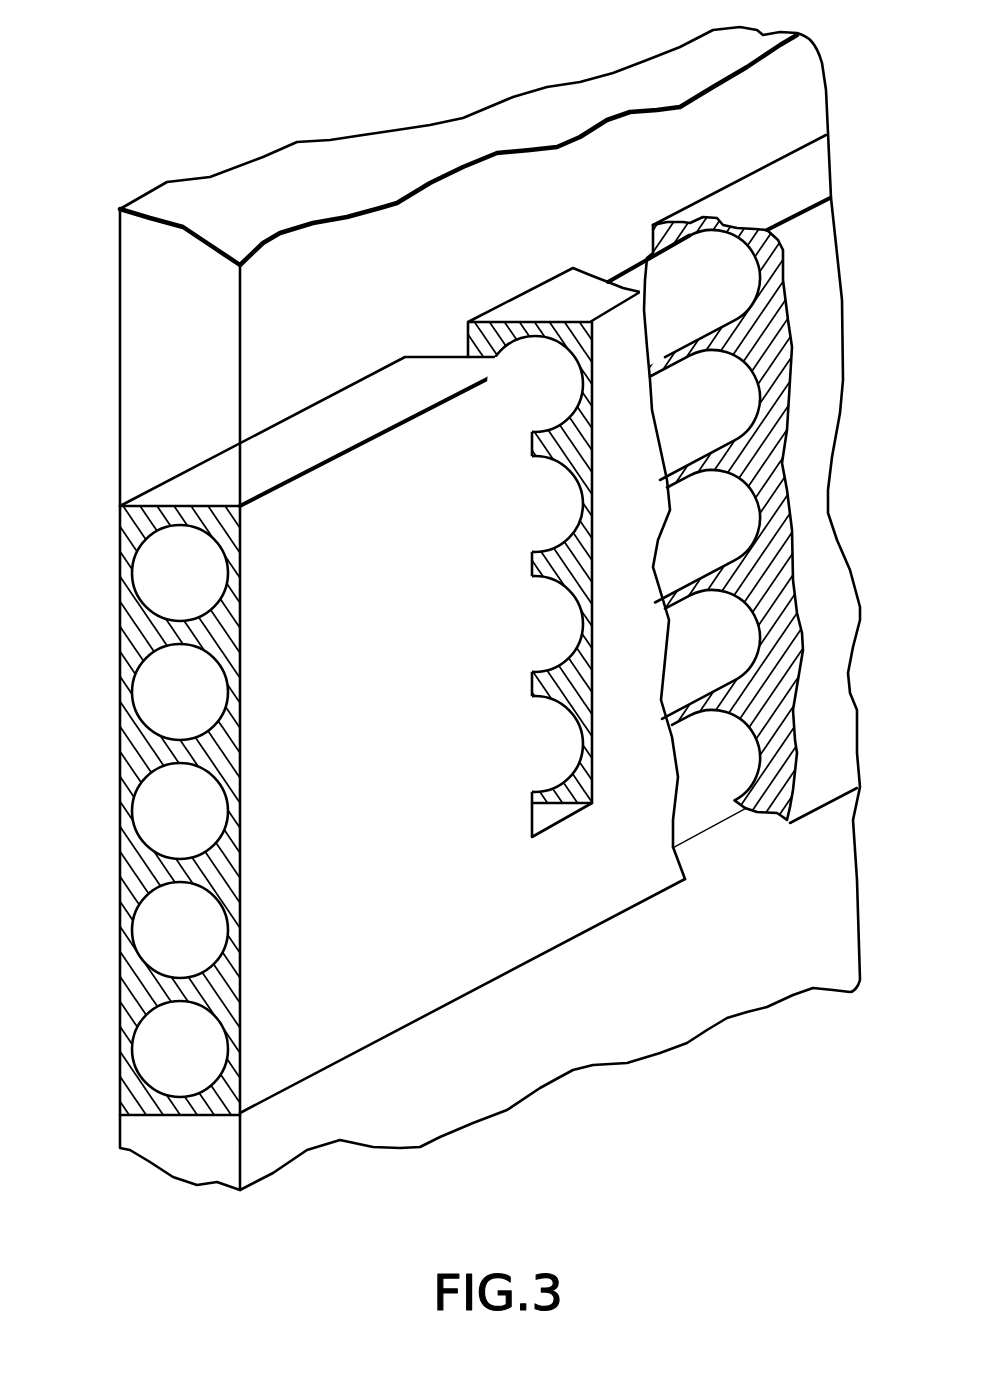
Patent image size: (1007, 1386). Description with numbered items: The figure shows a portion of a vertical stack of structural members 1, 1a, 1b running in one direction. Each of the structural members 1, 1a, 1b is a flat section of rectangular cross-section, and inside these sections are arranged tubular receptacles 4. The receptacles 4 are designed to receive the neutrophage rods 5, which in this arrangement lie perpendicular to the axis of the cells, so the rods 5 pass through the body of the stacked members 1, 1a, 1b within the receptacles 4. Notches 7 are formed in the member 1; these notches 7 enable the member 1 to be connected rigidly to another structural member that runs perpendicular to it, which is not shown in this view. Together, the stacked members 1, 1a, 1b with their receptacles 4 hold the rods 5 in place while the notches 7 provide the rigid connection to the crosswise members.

The structural member 1 is at (490, 970).
The structural member 1a is at (136, 1147).
The structural member 1b is at (130, 314).
The tubular receptacles 4 is at (141, 937).
The neutrophage rods 5 is at (644, 270).
The notches 7 is at (432, 356).